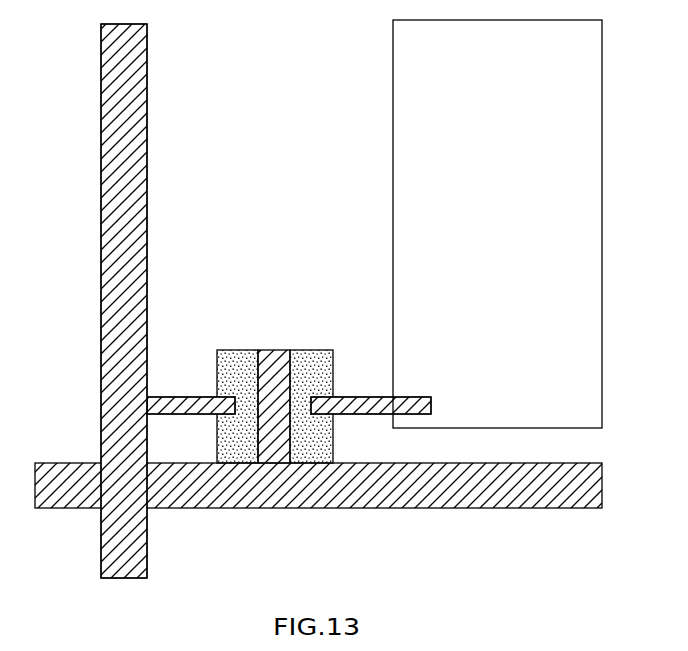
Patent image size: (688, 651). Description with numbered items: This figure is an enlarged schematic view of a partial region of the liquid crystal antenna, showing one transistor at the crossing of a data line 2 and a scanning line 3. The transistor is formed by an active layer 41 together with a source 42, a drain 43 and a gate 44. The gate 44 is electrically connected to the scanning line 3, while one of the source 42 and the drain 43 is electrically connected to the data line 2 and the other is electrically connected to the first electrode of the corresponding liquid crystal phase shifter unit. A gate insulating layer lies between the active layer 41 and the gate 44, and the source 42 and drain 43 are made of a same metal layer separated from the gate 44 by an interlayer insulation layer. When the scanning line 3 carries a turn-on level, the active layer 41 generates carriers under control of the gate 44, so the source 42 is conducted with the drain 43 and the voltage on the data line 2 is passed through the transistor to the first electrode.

The data line 2 is at (125, 318).
The scanning line 3 is at (402, 490).
The active layer 41 is at (284, 413).
The source 42 is at (322, 402).
The drain 43 is at (227, 402).
The gate 44 is at (273, 373).